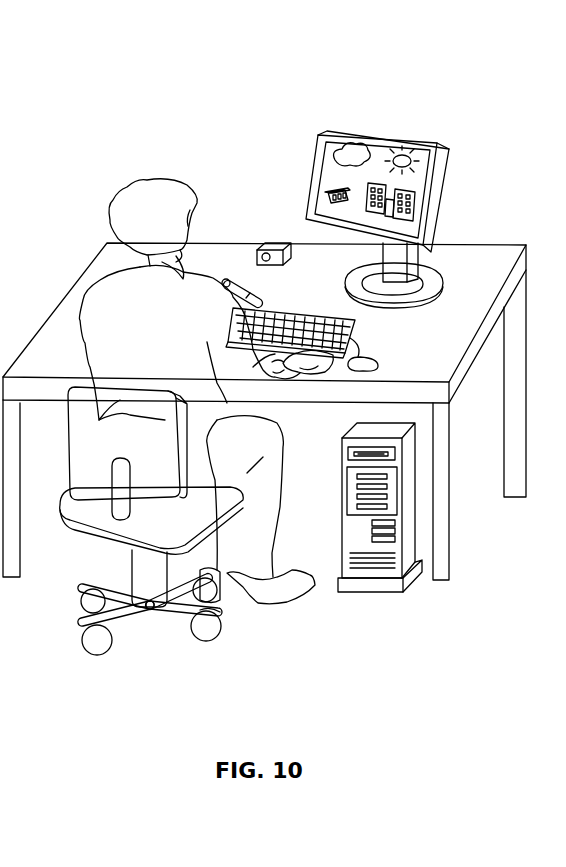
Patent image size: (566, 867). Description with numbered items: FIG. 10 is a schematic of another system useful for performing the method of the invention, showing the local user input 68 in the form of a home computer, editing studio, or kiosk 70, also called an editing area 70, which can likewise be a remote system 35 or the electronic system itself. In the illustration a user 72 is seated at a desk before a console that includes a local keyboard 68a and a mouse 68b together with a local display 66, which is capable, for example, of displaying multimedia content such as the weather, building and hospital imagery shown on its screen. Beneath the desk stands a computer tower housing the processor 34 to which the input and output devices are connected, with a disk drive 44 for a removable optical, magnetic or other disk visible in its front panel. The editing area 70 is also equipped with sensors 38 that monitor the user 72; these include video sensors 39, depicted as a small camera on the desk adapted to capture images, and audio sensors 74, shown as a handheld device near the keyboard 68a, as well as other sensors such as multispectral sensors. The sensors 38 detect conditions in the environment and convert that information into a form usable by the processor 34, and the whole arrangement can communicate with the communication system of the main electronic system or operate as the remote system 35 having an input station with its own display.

The editing area 70 is at (504, 133).
The local user input 68 is at (457, 233).
The local display 66 is at (390, 130).
The sensors 38 is at (283, 240).
The video sensors 39 is at (266, 243).
The audio sensors 74 is at (228, 280).
The user 72 is at (160, 333).
The local keyboard 68a is at (352, 321).
The mouse 68b is at (380, 363).
The disk drive 44 is at (347, 452).
The processor 34 is at (373, 588).
The remote system 35 is at (417, 640).